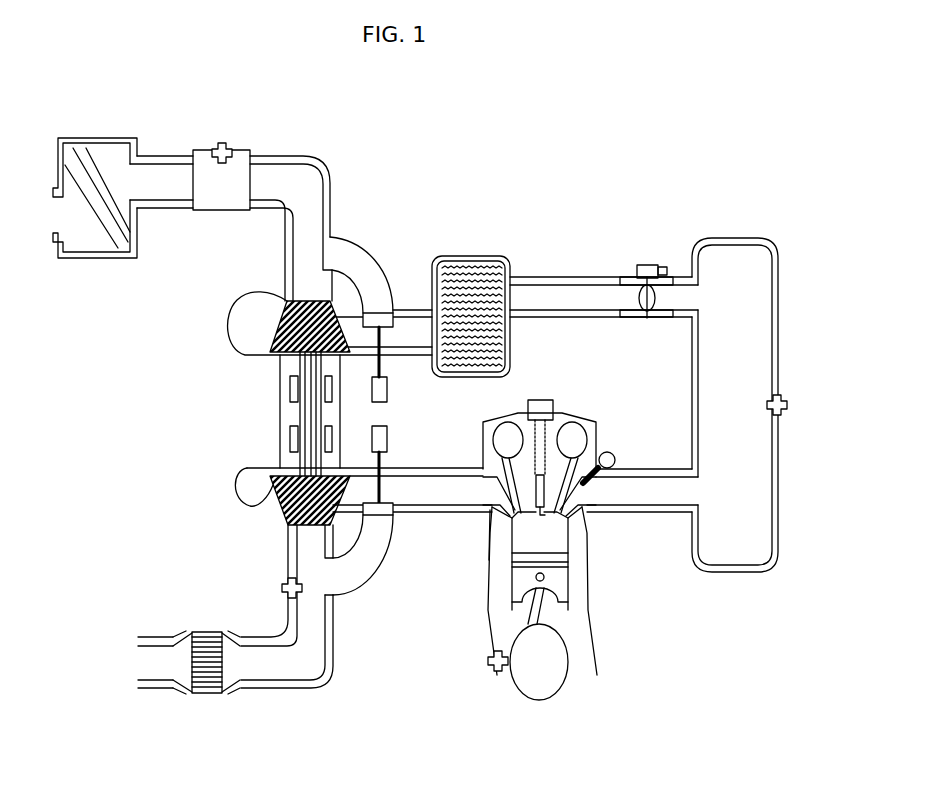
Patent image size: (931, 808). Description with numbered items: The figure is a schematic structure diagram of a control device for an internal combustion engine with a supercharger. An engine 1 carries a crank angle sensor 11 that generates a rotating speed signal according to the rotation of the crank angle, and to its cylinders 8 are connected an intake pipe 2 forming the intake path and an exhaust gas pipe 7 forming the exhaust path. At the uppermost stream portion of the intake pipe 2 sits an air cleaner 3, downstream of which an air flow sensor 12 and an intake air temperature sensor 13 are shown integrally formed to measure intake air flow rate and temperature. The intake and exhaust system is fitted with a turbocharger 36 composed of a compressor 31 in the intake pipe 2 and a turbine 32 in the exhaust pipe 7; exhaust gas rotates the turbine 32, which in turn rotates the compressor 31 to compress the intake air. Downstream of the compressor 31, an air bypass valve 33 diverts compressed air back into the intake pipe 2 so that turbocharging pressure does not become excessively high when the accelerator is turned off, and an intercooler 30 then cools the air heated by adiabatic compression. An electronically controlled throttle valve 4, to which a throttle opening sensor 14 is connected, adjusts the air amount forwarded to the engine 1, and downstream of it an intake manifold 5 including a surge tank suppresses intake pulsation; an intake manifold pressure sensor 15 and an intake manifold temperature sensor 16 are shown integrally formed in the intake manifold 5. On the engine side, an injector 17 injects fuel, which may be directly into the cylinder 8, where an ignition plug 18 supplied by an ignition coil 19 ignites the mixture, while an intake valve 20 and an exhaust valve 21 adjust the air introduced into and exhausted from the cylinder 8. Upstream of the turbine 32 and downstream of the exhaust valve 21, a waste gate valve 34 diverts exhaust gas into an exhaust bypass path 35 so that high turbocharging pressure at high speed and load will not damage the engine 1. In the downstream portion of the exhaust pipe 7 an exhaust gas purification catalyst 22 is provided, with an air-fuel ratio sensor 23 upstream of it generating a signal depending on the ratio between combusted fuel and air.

The engine 1 is at (583, 670).
The intake pipe 2 is at (155, 198).
The air cleaner 3 is at (98, 152).
The electronically controlled throttle valve 4 is at (648, 320).
The intake manifold 5 is at (747, 553).
The exhaust gas pipe 7 is at (145, 663).
The cylinder 8 is at (555, 543).
The crank angle sensor 11 is at (488, 663).
The air flow sensor 12 is at (245, 142).
The intake air temperature sensor 13 is at (225, 145).
The throttle opening sensor 14 is at (652, 263).
The intake manifold pressure sensor 15 is at (809, 371).
The intake manifold temperature sensor 16 is at (787, 395).
The injector 17 is at (612, 454).
The ignition plug 18 is at (485, 478).
The ignition coil 19 is at (543, 398).
The intake valve 20 is at (583, 515).
The exhaust valve 21 is at (507, 532).
The exhaust gas purification catalyst 22 is at (233, 672).
The air-fuel ratio sensor 23 is at (283, 580).
The intercooler 30 is at (475, 262).
The compressor 31 is at (276, 305).
The turbine 32 is at (278, 474).
The air bypass valve 33 is at (393, 317).
The waste gate valve 34 is at (387, 455).
The exhaust bypass path 35 is at (363, 557).
The turbocharger 36 is at (270, 385).